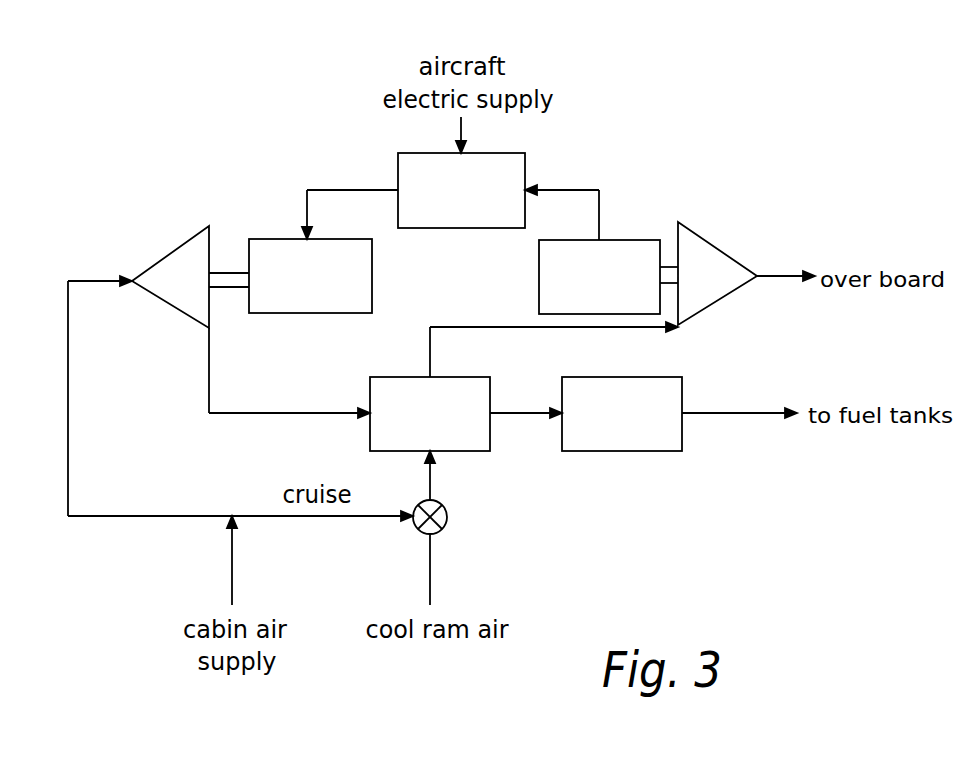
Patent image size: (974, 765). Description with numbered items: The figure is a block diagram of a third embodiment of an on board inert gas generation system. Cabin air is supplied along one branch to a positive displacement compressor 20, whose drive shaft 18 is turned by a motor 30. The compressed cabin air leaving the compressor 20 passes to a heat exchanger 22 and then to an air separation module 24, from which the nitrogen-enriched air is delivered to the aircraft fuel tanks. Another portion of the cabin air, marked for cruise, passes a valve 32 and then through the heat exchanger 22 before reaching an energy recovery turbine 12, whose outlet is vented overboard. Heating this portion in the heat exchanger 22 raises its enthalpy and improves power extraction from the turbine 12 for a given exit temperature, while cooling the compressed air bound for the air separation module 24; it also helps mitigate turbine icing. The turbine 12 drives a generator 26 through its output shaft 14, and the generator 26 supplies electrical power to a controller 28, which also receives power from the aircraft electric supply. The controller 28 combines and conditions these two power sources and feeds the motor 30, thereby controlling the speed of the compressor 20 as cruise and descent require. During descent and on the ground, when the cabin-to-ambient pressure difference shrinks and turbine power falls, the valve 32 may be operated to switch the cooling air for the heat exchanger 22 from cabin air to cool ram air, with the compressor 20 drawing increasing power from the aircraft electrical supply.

The energy recovery turbine 12 is at (718, 300).
The output shaft 14 is at (669, 263).
The drive shaft 18 is at (233, 271).
The positive displacement compressor 20 is at (171, 253).
The heat exchanger 22 is at (470, 444).
The air separation module 24 is at (623, 451).
The generator 26 is at (539, 262).
The controller 28 is at (460, 228).
The motor 30 is at (297, 313).
The valve 32 is at (447, 517).